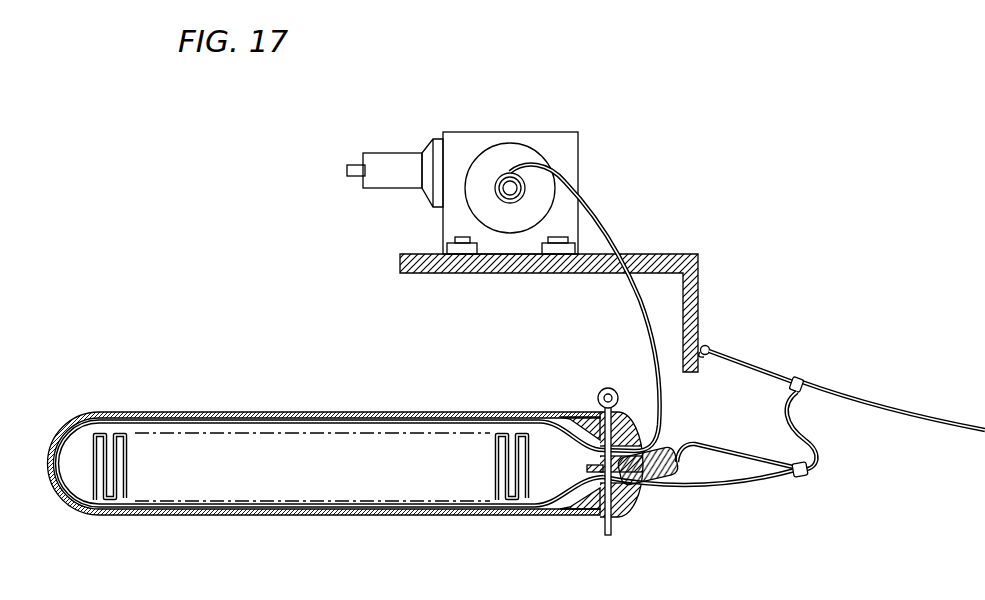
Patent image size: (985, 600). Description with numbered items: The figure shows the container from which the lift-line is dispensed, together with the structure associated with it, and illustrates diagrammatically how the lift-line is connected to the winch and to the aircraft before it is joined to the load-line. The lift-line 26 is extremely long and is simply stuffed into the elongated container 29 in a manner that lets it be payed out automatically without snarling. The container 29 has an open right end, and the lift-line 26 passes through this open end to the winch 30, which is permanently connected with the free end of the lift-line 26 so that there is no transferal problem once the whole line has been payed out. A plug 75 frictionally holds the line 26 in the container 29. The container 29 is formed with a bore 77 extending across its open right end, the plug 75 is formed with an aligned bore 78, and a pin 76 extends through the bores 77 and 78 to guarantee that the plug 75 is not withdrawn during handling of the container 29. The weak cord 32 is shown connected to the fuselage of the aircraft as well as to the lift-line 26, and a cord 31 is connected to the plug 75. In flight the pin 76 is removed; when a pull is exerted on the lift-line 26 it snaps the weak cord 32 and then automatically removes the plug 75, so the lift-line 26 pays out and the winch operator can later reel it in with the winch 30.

The lift-line 26 is at (612, 223).
The elongated container 29 is at (218, 515).
The winch 30 is at (523, 114).
The cord 31 is at (739, 432).
The weak cord 32 is at (735, 362).
The plug 75 is at (660, 488).
The pin 76 is at (601, 391).
The bore 77 is at (604, 518).
The bore 78 is at (597, 460).